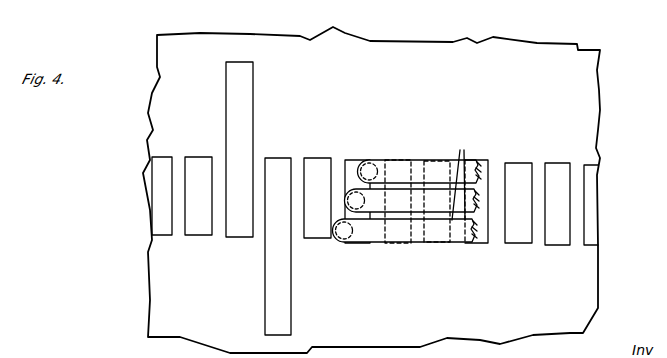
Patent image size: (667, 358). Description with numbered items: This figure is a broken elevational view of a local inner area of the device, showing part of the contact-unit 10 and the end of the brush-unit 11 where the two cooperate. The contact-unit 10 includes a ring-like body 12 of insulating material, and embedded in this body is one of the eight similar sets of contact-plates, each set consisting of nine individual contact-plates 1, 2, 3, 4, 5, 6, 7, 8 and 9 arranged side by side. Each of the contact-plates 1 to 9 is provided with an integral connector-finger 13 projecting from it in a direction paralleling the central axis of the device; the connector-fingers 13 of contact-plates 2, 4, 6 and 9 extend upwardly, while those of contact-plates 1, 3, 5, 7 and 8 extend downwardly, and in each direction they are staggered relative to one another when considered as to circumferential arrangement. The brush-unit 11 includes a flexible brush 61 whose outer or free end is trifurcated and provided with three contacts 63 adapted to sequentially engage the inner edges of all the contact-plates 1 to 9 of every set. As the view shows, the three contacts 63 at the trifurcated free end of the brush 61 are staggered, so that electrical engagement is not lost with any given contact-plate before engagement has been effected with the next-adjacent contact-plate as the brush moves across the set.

The contact-plate 1 is at (417, 163).
The contact-plate 2 is at (421, 165).
The contact-plate 3 is at (489, 170).
The contact-plate 4 is at (160, 159).
The contact-plate 5 is at (195, 161).
The contact-plate 6 is at (233, 238).
The contact-plate 7 is at (278, 165).
The contact-plate 8 is at (316, 165).
The contact-plate 9 is at (349, 166).
The contact-unit 10 is at (562, 180).
The brush-unit 11 is at (463, 175).
The ring-like body 12 is at (587, 115).
The connector-finger 13 is at (242, 85).
The flexible brush 61 is at (437, 176).
The contact 63 is at (375, 165).